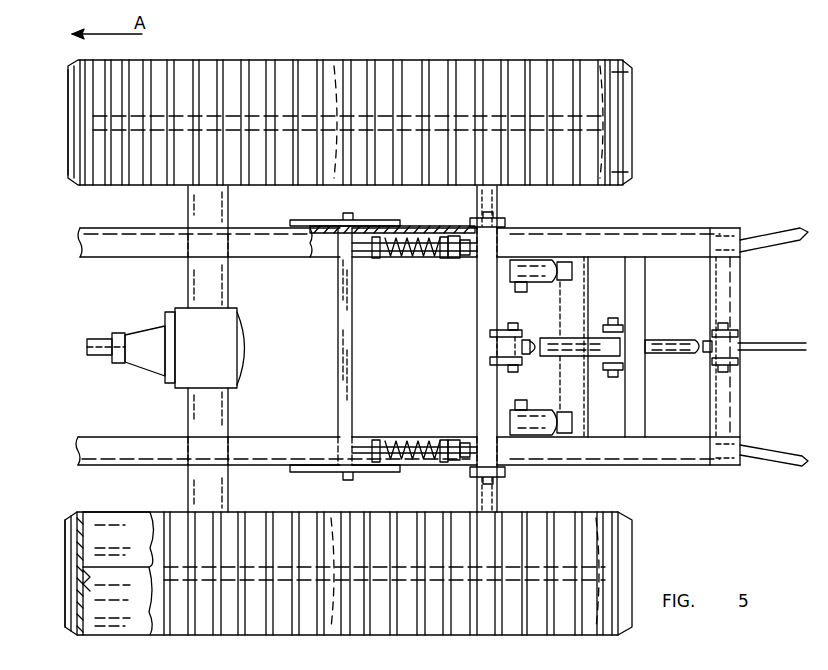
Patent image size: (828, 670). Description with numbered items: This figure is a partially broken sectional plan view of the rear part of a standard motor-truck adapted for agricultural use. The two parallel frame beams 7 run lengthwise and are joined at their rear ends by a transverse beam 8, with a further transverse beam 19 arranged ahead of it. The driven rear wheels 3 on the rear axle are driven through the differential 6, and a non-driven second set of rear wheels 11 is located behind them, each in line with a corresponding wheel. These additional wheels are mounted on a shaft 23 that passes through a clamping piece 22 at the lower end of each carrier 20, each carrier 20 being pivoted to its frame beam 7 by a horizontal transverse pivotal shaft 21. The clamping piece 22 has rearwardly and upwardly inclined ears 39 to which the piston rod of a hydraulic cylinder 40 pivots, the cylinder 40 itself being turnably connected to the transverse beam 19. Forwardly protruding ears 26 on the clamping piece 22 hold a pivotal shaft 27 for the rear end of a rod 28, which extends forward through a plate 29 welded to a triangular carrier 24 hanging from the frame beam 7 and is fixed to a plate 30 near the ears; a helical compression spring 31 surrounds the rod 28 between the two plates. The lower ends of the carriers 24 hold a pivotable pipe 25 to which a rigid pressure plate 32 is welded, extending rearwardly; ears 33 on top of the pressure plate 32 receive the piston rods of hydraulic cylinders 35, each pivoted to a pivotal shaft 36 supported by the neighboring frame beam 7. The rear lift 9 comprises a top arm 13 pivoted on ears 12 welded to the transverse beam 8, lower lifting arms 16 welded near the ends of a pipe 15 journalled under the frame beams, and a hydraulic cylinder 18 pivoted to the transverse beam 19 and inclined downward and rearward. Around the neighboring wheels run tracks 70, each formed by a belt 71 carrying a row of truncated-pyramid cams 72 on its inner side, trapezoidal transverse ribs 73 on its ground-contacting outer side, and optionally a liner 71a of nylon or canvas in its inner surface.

The rear wheels 3 is at (320, 59).
The differential 6 is at (244, 345).
The frame beams 7 is at (106, 258).
The transverse beam 8 is at (741, 276).
The rear lift 9 is at (786, 430).
The second set of rear wheels 11 is at (575, 62).
The ears 12 is at (742, 338).
The top arm 13 is at (768, 352).
The pipe 15 is at (741, 392).
The lower lifting arm 16 is at (772, 236).
The hydraulic cylinder 18 is at (660, 354).
The transverse beam 19 is at (645, 300).
The carrier 20 is at (506, 222).
The pivotal shaft 21 is at (487, 484).
The clamping piece 22 is at (477, 386).
The shaft 23 is at (480, 205).
The carrier 24 is at (293, 222).
The pipe 25 is at (340, 305).
The ears 26 is at (452, 260).
The pivotal shaft 27 is at (465, 258).
The rod 28 is at (442, 260).
The plate 29 is at (375, 260).
The plate 30 is at (448, 233).
The helical compression spring 31 is at (400, 258).
The pressure plate 32 is at (590, 404).
The ears 33 is at (565, 272).
The hydraulic cylinder 35 is at (556, 240).
The pivotal shaft 36 is at (520, 282).
The ears 39 is at (490, 360).
The hydraulic cylinder 40 is at (576, 298).
The tracks 70 is at (420, 58).
The belt 71 is at (82, 634).
The liner 71a is at (70, 625).
The cams 72 is at (92, 575).
The transverse ribs 73 is at (634, 80).